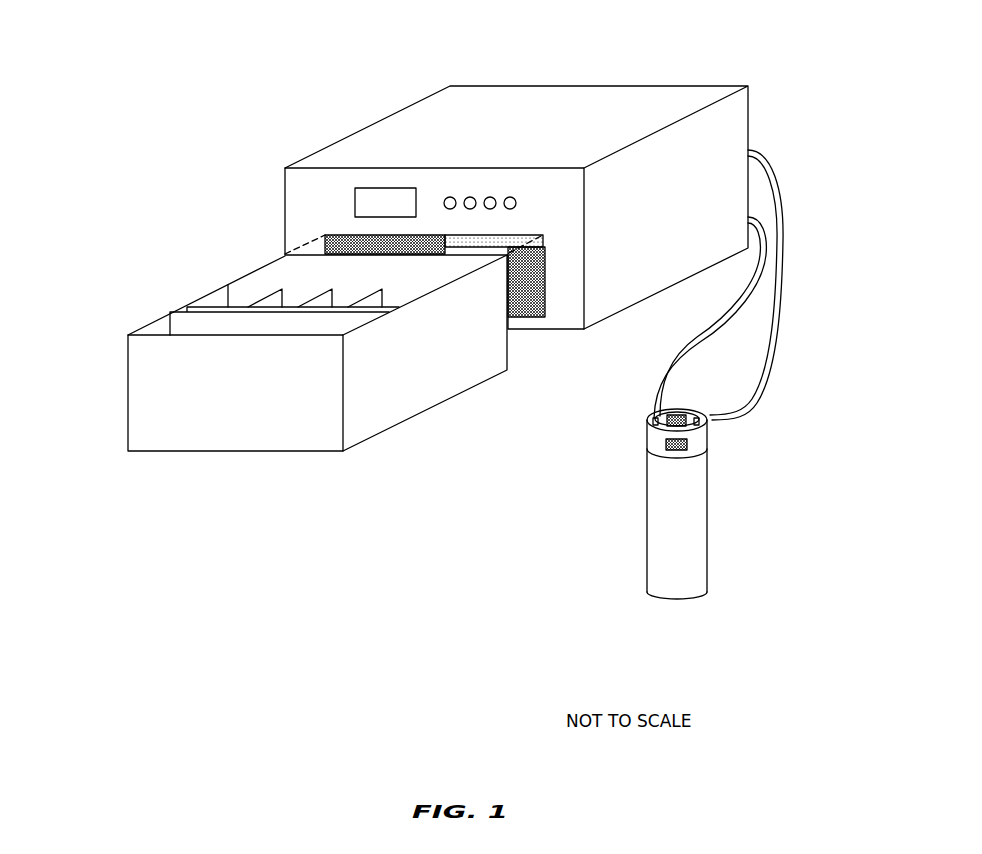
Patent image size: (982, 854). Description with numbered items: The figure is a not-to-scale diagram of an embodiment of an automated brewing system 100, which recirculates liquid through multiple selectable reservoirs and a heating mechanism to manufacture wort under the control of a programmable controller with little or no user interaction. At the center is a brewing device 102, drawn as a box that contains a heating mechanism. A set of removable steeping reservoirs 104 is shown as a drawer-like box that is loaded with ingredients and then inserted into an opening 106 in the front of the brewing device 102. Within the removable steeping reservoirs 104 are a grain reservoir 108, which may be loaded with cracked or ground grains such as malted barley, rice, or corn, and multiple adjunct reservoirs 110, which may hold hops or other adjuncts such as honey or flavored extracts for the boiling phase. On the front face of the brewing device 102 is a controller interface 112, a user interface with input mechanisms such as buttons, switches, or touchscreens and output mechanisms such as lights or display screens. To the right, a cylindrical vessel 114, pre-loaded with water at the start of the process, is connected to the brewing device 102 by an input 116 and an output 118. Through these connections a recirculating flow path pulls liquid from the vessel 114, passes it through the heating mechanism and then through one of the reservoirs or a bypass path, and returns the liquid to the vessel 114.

The automated brewing system 100 is at (282, 622).
The brewing device 102 is at (583, 86).
The removable steeping reservoirs 104 is at (365, 413).
The opening 106 is at (515, 298).
The grain reservoir 108 is at (187, 327).
The adjunct reservoirs 110 is at (402, 303).
The controller interface 112 is at (380, 187).
The vessel 114 is at (647, 565).
The input 116 is at (717, 421).
The output 118 is at (707, 337).